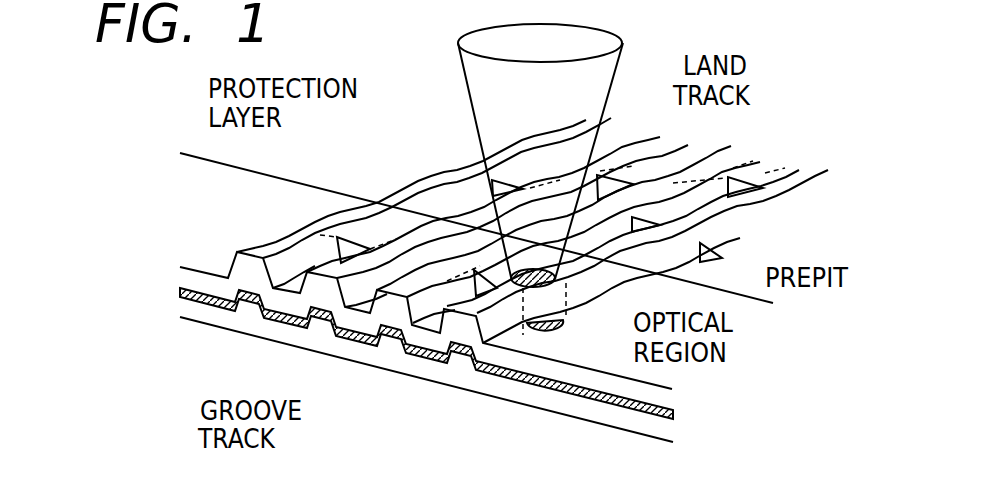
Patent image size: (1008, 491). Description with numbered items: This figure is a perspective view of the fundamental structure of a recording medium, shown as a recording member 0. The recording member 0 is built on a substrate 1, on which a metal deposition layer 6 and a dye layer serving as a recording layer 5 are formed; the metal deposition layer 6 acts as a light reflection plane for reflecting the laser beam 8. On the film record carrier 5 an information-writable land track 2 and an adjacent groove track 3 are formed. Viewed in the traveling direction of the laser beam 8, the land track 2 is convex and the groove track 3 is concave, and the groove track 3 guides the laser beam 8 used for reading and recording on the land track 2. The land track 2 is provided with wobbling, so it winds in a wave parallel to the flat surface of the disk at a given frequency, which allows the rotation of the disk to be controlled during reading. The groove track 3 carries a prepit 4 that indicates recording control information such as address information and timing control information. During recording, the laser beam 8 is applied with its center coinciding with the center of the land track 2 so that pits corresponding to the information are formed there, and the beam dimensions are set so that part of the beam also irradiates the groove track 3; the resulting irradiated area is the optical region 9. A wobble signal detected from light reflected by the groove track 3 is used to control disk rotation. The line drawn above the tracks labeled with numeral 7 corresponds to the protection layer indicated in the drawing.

The recording member 0 is at (514, 278).
The substrate 1 is at (590, 405).
The land track 2 is at (598, 120).
The groove track 3 is at (290, 288).
The prepit 4 is at (520, 181).
The recording layer 5 is at (678, 400).
The metal deposition layer 6 is at (515, 383).
The protection layer 7 is at (280, 177).
The laser beam 8 is at (620, 60).
The optical region 9 is at (568, 295).